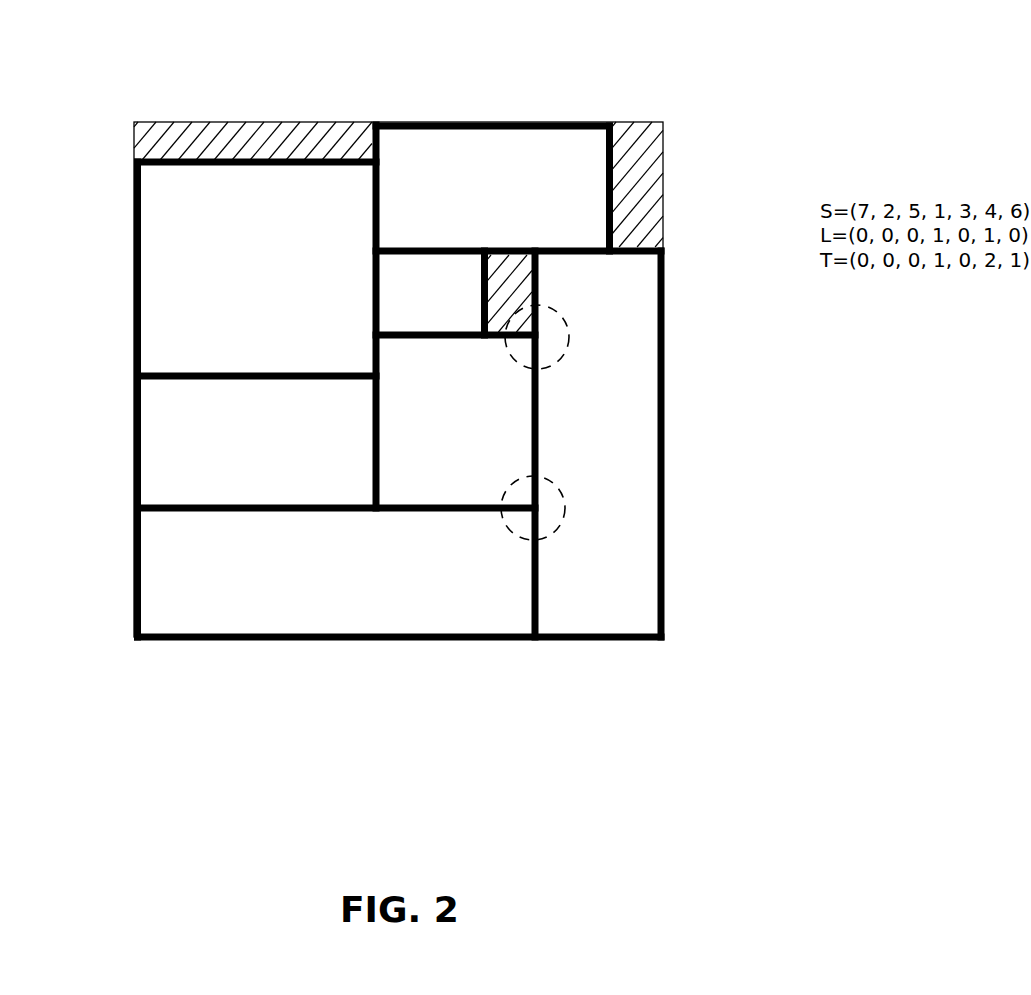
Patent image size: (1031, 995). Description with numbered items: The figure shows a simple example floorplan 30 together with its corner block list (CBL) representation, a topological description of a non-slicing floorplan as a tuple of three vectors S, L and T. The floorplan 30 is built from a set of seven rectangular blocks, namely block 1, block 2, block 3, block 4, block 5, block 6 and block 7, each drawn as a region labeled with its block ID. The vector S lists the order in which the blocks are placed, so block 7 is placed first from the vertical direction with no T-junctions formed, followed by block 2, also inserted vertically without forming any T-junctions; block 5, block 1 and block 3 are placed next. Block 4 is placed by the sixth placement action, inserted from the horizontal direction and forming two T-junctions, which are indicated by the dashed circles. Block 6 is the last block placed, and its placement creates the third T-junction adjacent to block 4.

The floorplan 30 is at (176, 106).
The block 1 is at (456, 422).
The block 2 is at (257, 442).
The block 3 is at (430, 293).
The block 4 is at (598, 444).
The block 5 is at (257, 269).
The block 6 is at (493, 189).
The block 7 is at (336, 573).